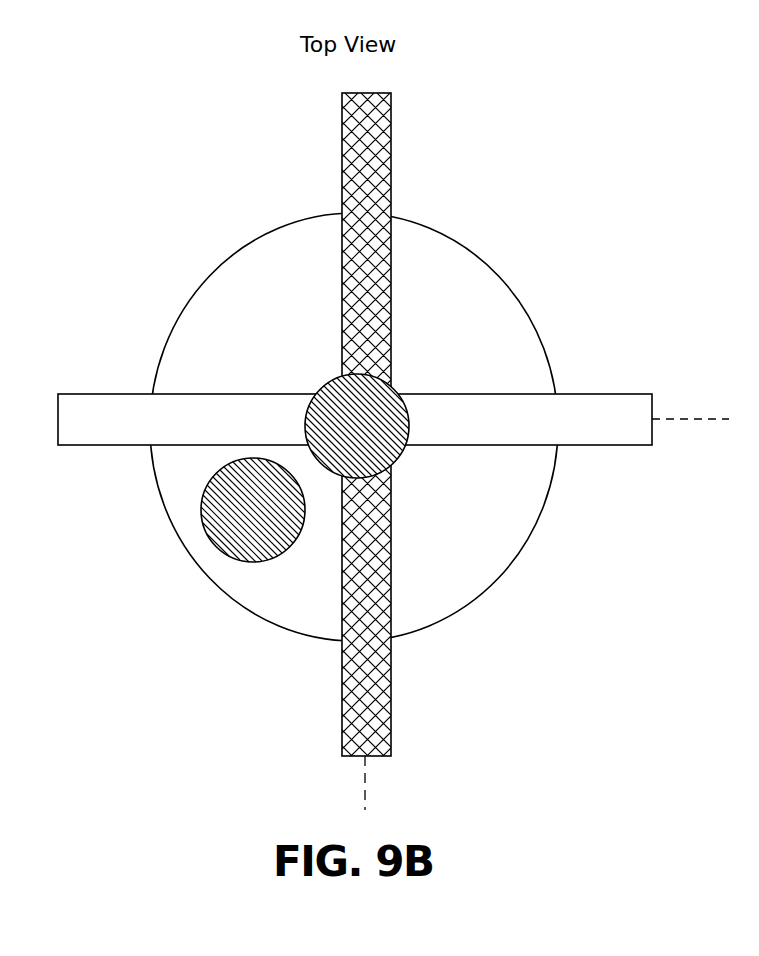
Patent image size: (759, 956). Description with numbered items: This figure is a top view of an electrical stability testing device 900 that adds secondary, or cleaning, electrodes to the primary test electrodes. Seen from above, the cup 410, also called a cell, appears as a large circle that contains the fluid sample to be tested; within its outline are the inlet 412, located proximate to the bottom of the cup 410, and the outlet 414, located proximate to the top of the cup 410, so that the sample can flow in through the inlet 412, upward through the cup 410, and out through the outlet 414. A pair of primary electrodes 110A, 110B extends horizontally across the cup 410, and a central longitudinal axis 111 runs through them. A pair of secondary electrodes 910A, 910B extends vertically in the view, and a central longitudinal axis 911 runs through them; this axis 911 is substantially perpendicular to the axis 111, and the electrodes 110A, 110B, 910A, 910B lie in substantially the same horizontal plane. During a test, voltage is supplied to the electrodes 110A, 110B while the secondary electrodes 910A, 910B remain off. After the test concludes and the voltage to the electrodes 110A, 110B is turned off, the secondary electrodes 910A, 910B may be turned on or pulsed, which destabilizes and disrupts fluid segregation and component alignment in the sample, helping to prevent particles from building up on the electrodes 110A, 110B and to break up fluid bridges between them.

The ES testing device 900 is at (226, 68).
The secondary electrode 910A is at (391, 147).
The secondary electrode 910B is at (392, 715).
The central longitudinal axis 911 is at (367, 793).
The electrode 110A is at (112, 446).
The electrode 110B is at (605, 446).
The central longitudinal axis 111 is at (688, 420).
The cup 410 is at (158, 502).
The inlet 412 is at (245, 567).
The outlet 414 is at (397, 388).